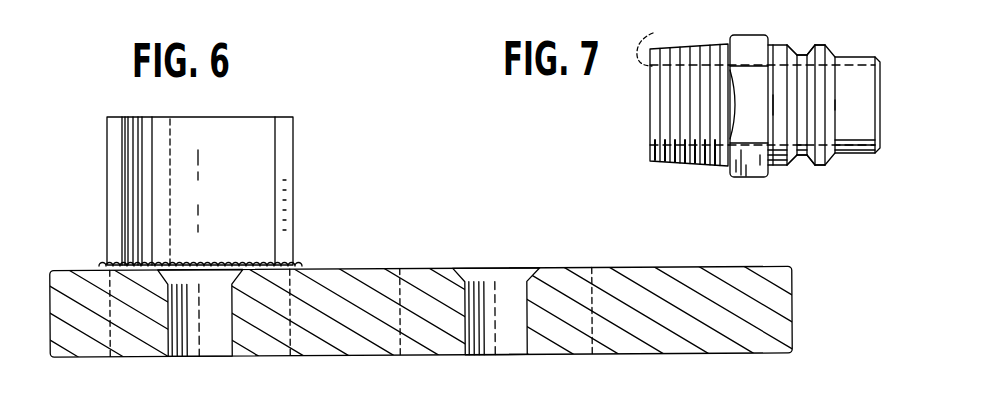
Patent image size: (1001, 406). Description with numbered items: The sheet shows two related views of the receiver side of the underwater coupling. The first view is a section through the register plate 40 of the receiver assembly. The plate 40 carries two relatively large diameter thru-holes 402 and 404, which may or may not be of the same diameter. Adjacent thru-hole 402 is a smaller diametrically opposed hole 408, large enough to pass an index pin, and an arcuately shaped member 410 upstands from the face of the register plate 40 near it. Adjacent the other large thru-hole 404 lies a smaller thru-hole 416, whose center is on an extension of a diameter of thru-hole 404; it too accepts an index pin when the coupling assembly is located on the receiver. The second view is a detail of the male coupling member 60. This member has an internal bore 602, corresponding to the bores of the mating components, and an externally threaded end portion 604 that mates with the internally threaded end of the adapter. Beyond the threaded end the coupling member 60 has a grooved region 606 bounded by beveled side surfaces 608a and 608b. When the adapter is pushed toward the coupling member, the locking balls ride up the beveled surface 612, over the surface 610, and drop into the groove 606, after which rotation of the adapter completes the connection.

In FIG. 6, the register plate 40 is at (421, 330).
In FIG. 6, the thru-hole 402 is at (290, 340).
In FIG. 6, the thru-hole 404 is at (400, 335).
In FIG. 6, the hole 408 is at (233, 343).
In FIG. 6, the arcuately shaped member 410 is at (292, 153).
In FIG. 6, the thru-hole 416 is at (527, 340).
In FIG. 7, the male coupling member 60 is at (746, 119).
In FIG. 7, the internal bore 602 is at (658, 39).
In FIG. 7, the externally threaded end portion 604 is at (660, 162).
In FIG. 7, the grooved region 606 is at (802, 168).
In FIG. 7, the beveled side surface 608a is at (787, 168).
In FIG. 7, the beveled side surface 608b is at (810, 168).
In FIG. 7, the surface 610 is at (818, 160).
In FIG. 7, the beveled surface 612 is at (826, 47).